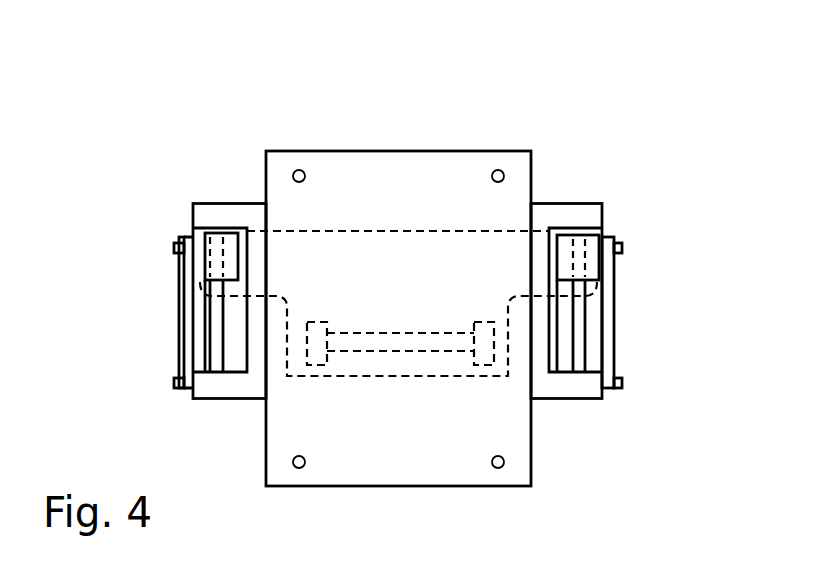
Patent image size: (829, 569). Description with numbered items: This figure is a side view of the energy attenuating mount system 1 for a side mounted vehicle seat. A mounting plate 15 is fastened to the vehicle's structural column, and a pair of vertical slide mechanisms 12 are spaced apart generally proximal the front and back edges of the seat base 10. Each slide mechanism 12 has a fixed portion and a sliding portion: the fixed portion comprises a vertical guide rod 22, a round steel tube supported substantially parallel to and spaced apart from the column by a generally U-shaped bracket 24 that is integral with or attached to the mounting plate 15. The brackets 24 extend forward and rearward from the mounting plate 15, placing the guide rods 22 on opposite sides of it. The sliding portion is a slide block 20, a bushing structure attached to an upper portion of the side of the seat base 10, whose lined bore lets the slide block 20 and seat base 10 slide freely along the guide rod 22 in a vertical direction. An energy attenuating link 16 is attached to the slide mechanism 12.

The mount system 1 is at (558, 95).
The seat base 10 is at (332, 252).
The vertical slide mechanism 12 is at (148, 360).
The mounting plate 15 is at (337, 487).
The energy attenuating link 16 is at (177, 313).
The slide block 20 is at (587, 243).
The vertical guide rod 22 is at (578, 315).
The U-shaped bracket 24 is at (230, 203).